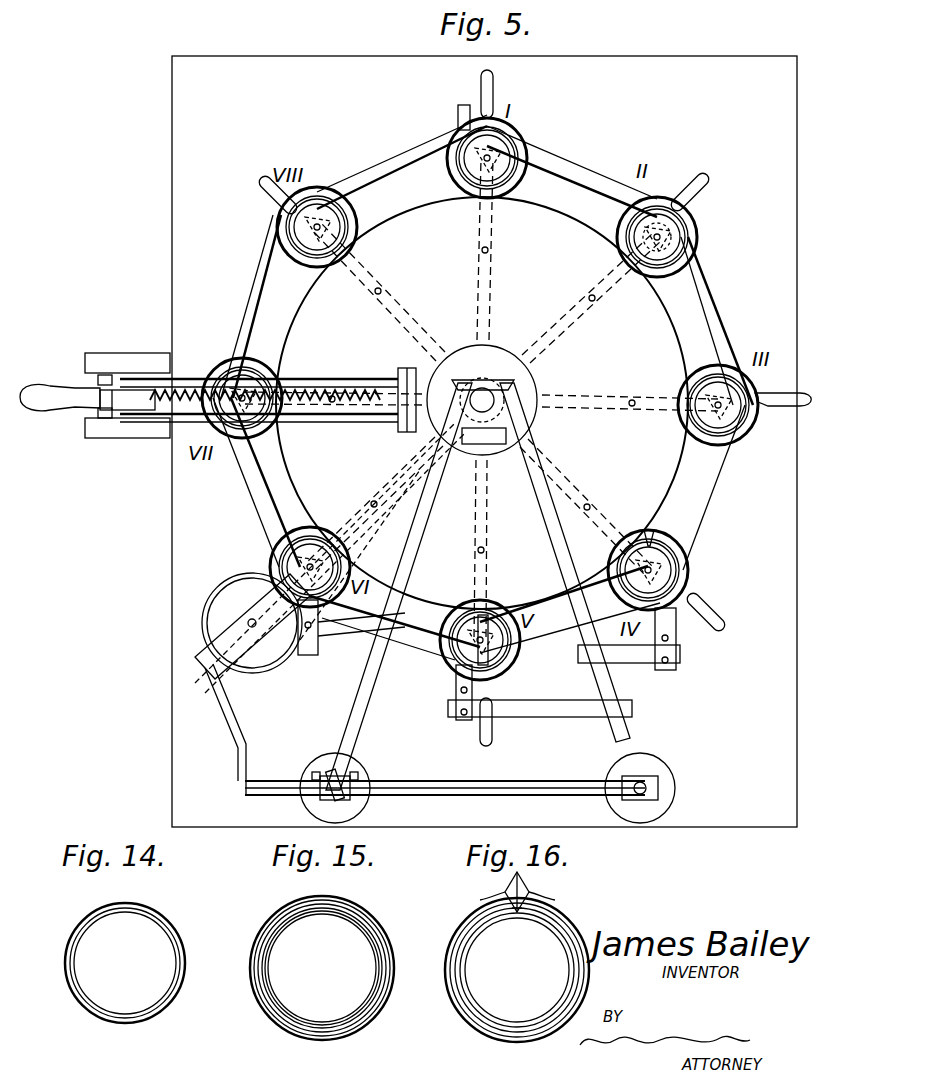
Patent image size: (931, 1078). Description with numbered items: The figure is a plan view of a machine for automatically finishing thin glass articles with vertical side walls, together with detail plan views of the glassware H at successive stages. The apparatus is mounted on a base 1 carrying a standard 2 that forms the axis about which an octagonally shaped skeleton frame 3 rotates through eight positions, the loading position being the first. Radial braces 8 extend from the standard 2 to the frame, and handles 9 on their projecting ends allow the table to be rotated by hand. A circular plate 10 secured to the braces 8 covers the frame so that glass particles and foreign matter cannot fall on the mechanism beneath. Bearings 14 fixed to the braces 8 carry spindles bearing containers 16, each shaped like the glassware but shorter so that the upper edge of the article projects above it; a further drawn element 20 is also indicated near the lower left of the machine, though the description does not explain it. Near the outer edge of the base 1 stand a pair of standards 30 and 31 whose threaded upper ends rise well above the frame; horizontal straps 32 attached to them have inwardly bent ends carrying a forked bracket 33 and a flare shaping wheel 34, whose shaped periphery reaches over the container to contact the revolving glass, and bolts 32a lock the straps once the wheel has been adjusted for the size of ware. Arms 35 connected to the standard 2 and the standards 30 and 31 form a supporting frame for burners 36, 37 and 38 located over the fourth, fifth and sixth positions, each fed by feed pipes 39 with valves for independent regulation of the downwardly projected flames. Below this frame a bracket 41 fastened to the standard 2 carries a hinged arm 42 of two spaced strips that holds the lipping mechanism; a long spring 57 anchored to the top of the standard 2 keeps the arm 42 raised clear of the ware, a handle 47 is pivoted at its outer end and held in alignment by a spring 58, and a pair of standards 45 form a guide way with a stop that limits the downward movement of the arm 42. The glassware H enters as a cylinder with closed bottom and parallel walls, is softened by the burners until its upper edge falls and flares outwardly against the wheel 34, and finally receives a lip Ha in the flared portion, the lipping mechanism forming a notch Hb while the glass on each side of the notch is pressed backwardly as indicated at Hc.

In FIG. 5, the base 1 is at (484, 441).
In FIG. 5, the standard 2 is at (485, 392).
In FIG. 5, the skeleton frame 3 is at (573, 175).
In FIG. 5, the radial braces 8 is at (455, 298).
In FIG. 5, the handles 9 is at (480, 84).
In FIG. 5, the circular plate 10 is at (482, 403).
In FIG. 5, the bearings 14 is at (690, 241).
In FIG. 5, the containers 16 is at (522, 142).
In FIG. 5, the connecting rod 20 is at (382, 498).
In FIG. 5, the standard 30 is at (662, 786).
In FIG. 5, the standard 31 is at (352, 800).
In FIG. 5, the horizontal straps 32 is at (392, 781).
In FIG. 5, the bolts 32a is at (330, 772).
In FIG. 5, the forked bracket 33 is at (238, 612).
In FIG. 5, the flare shaping wheel 34 is at (245, 578).
In FIG. 5, the arms 35 is at (520, 486).
In FIG. 5, the burner 36 is at (648, 530).
In FIG. 5, the burner 37 is at (508, 612).
In FIG. 5, the burner 38 is at (360, 555).
In FIG. 5, the feed pipes 39 is at (295, 565).
In FIG. 5, the bracket 41 is at (407, 368).
In FIG. 5, the arm 42 is at (336, 380).
In FIG. 5, the standards 45 is at (130, 360).
In FIG. 5, the handle 47 is at (45, 392).
In FIG. 5, the spring 57 is at (350, 414).
In FIG. 5, the spring 58 is at (195, 388).
In FIG. 14, the glassware H is at (125, 963).
In FIG. 15, the glassware H is at (322, 968).
In FIG. 16, the glassware H is at (517, 970).
In FIG. 16, the lip Ha is at (524, 884).
In FIG. 16, the notch Hb is at (516, 912).
In FIG. 16, the pressed-back glass Hc is at (500, 892).